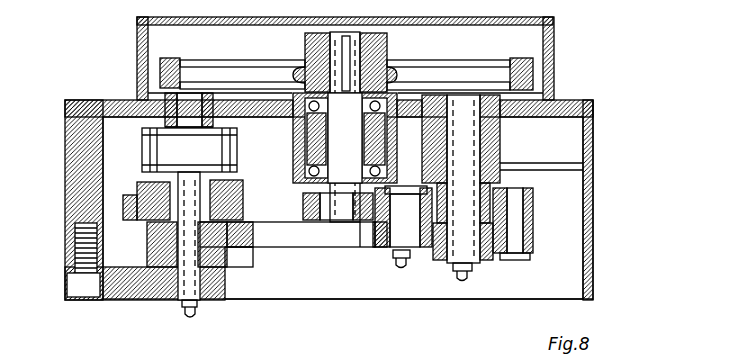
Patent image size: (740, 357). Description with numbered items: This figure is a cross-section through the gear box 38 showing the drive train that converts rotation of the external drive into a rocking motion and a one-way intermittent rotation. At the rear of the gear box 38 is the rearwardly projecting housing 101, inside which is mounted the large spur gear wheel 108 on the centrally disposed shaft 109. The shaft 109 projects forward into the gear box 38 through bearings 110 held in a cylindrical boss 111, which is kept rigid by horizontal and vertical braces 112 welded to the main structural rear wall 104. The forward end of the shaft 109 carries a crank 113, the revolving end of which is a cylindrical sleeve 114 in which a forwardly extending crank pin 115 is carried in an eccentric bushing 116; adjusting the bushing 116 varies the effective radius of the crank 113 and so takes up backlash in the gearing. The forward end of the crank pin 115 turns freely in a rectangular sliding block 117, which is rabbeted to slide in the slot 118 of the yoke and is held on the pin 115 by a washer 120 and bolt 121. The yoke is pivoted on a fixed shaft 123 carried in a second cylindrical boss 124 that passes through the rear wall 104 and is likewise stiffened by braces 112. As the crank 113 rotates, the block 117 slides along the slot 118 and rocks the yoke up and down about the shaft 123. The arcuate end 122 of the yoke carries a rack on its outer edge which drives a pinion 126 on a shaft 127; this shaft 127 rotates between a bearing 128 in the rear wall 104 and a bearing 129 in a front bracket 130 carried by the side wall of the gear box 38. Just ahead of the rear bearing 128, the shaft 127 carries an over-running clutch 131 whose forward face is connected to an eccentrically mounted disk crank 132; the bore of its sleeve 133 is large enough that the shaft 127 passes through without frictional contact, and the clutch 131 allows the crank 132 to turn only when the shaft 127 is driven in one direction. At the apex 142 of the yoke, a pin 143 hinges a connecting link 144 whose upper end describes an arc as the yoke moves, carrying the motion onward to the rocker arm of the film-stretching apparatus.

The rearwardly projecting housing 101 is at (147, 18).
The main structural rear wall 104 is at (568, 102).
The large spur gear wheel 108 is at (155, 62).
The centrally disposed shaft 109 is at (347, 57).
The bearings 110 is at (297, 95).
The cylindrical boss 111 is at (293, 127).
The braces 112 is at (572, 150).
The crank 113 is at (303, 205).
The cylindrical sleeve 114 is at (433, 247).
The crank pin 115 is at (422, 247).
The eccentric bushing 116 is at (383, 232).
The rectangular sliding block 117 is at (385, 242).
The slot 118 is at (320, 240).
The washer 120 is at (383, 250).
The bolt 121 is at (408, 255).
The arcuate end 122 is at (250, 246).
The fixed shaft 123 is at (470, 190).
The cylindrical boss 124 is at (493, 140).
The pinion 126 is at (163, 237).
The shaft 127 is at (180, 103).
The bearing 128 is at (165, 117).
The bearing 129 is at (227, 297).
The front bracket 130 is at (115, 288).
The over-running clutch 131 is at (163, 148).
The eccentrically mounted disk crank 132 is at (147, 210).
The sleeve 133 is at (238, 268).
The apex 142 is at (533, 243).
The pin 143 is at (515, 248).
The connecting link 144 is at (527, 203).
The gear box 38 is at (590, 288).